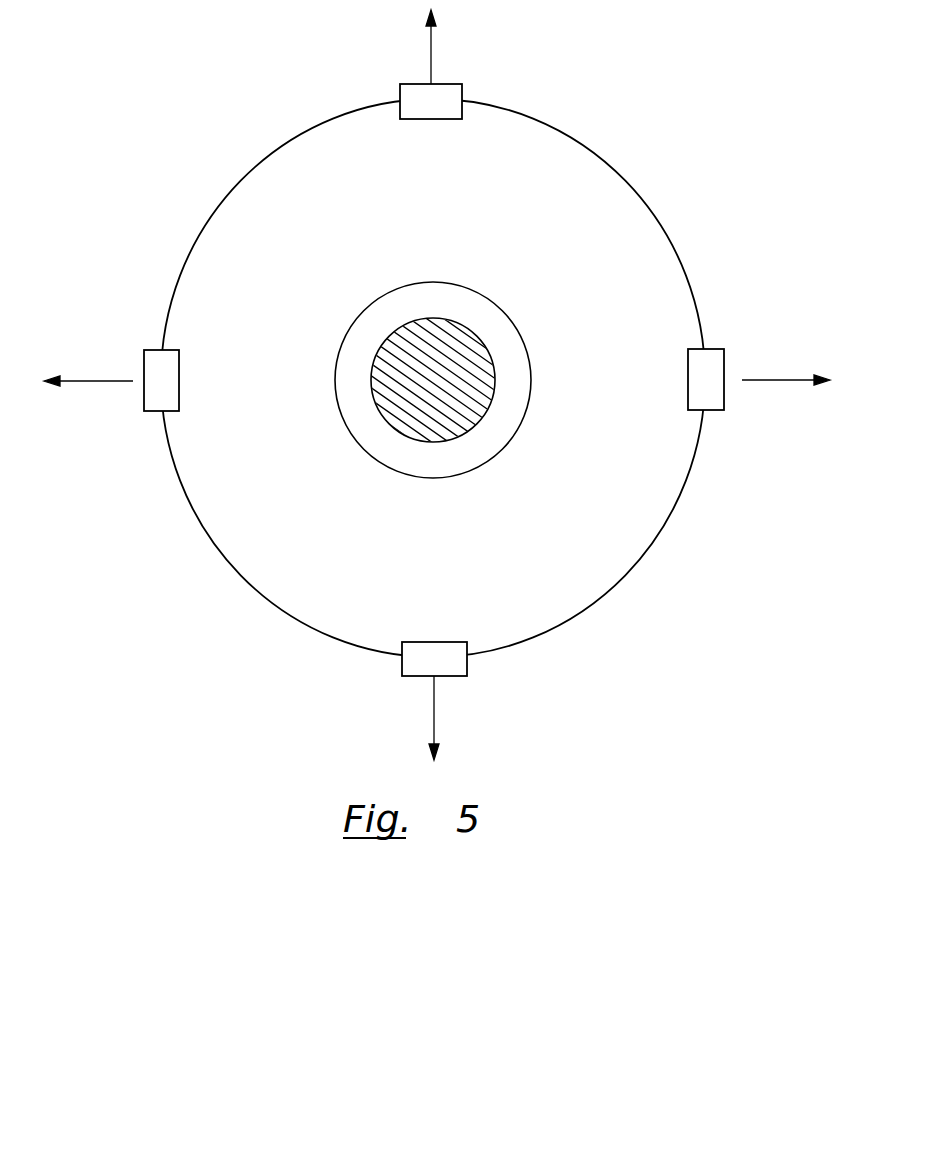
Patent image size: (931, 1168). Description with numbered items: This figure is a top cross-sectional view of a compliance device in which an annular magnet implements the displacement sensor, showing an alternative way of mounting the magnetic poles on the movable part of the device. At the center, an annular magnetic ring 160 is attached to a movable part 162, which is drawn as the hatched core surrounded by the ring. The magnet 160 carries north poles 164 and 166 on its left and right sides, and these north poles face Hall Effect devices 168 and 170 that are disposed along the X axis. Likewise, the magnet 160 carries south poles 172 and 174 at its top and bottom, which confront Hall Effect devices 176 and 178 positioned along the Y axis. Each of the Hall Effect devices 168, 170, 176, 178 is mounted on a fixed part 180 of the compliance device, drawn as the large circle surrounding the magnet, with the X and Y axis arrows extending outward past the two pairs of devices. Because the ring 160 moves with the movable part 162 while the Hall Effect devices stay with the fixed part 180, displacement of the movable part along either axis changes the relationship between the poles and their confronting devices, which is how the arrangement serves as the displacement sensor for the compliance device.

The annular magnetic ring 160 is at (508, 318).
The movable part 162 is at (488, 406).
The north pole 164 is at (338, 371).
The north pole 166 is at (522, 372).
The Hall Effect device 168 is at (144, 358).
The Hall Effect device 170 is at (724, 366).
The south pole 172 is at (420, 290).
The south pole 174 is at (427, 474).
The Hall Effect device 176 is at (446, 84).
The Hall Effect device 178 is at (454, 676).
The fixed part 180 is at (210, 165).